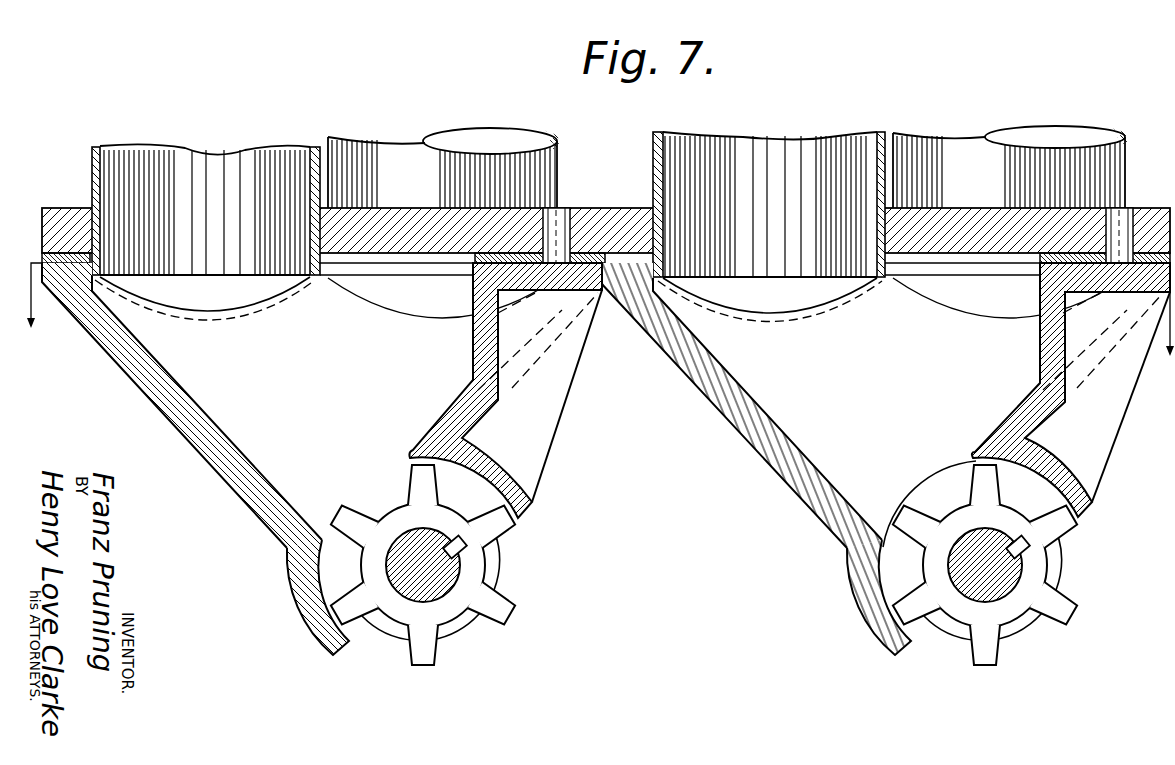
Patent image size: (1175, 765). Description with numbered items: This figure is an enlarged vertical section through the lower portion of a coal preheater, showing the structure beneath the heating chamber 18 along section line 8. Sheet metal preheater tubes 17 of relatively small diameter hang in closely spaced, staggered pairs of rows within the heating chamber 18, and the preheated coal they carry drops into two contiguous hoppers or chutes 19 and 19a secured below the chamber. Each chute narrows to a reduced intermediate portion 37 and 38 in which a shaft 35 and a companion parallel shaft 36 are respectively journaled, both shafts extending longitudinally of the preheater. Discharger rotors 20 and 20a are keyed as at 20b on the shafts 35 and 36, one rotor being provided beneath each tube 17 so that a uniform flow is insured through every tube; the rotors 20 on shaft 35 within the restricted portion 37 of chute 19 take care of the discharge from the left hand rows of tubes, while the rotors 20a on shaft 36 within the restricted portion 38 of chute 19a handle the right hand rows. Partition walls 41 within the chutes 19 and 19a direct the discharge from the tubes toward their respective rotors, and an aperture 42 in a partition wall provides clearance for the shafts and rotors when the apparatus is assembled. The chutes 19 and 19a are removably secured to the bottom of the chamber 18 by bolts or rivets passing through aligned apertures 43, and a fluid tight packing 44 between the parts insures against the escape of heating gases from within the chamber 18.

The section line 8- 8 is at (599, 319).
The preheater tubes 17 is at (728, 168).
The heating chamber 18 is at (605, 218).
The hopper or chute 19 is at (193, 440).
The hopper or chute 19a is at (760, 440).
The discharger rotor 20 is at (472, 565).
The discharger rotor 20a is at (1035, 568).
The key 20b is at (463, 548).
The shaft 35 is at (440, 588).
The shaft 36 is at (977, 593).
The reduced intermediate portion 37 is at (300, 584).
The reduced intermediate portion 38 is at (857, 577).
The partition walls 41 is at (187, 375).
The aperture 42 is at (934, 477).
The aligned apertures 43 is at (560, 213).
The fluid tight packing 44 is at (65, 262).